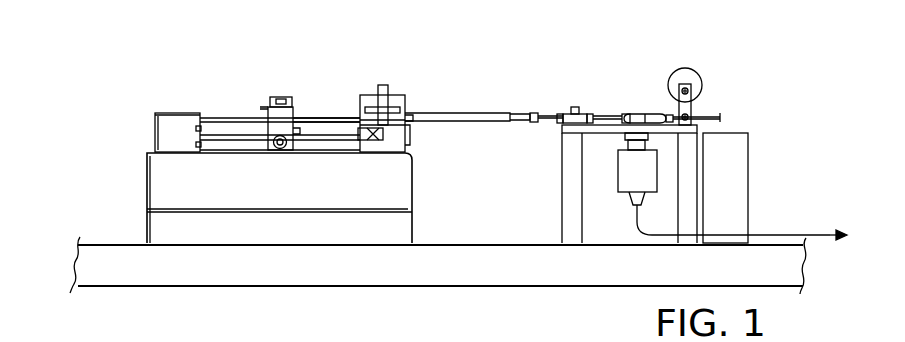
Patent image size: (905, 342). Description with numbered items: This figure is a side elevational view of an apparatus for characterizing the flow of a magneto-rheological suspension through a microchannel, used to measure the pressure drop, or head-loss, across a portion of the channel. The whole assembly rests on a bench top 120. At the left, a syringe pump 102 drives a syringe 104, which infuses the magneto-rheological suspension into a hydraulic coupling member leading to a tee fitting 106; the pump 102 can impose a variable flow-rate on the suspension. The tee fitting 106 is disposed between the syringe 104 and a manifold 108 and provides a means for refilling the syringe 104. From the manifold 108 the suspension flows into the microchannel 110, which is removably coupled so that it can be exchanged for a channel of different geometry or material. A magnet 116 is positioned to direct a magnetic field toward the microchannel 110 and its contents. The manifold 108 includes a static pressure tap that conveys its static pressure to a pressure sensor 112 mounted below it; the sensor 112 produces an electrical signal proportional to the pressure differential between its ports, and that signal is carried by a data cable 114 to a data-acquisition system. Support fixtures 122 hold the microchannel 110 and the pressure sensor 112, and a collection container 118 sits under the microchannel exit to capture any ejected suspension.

The syringe pump 102 is at (170, 187).
The syringe 104 is at (448, 112).
The tee fitting 106 is at (575, 106).
The manifold 108 is at (634, 113).
The microchannel 110 is at (653, 113).
The pressure sensor 112 is at (625, 172).
The data cable 114 is at (837, 230).
The magnet 116 is at (703, 83).
The collection container 118 is at (737, 165).
The bench top 120 is at (582, 278).
The support fixtures 122 is at (562, 155).